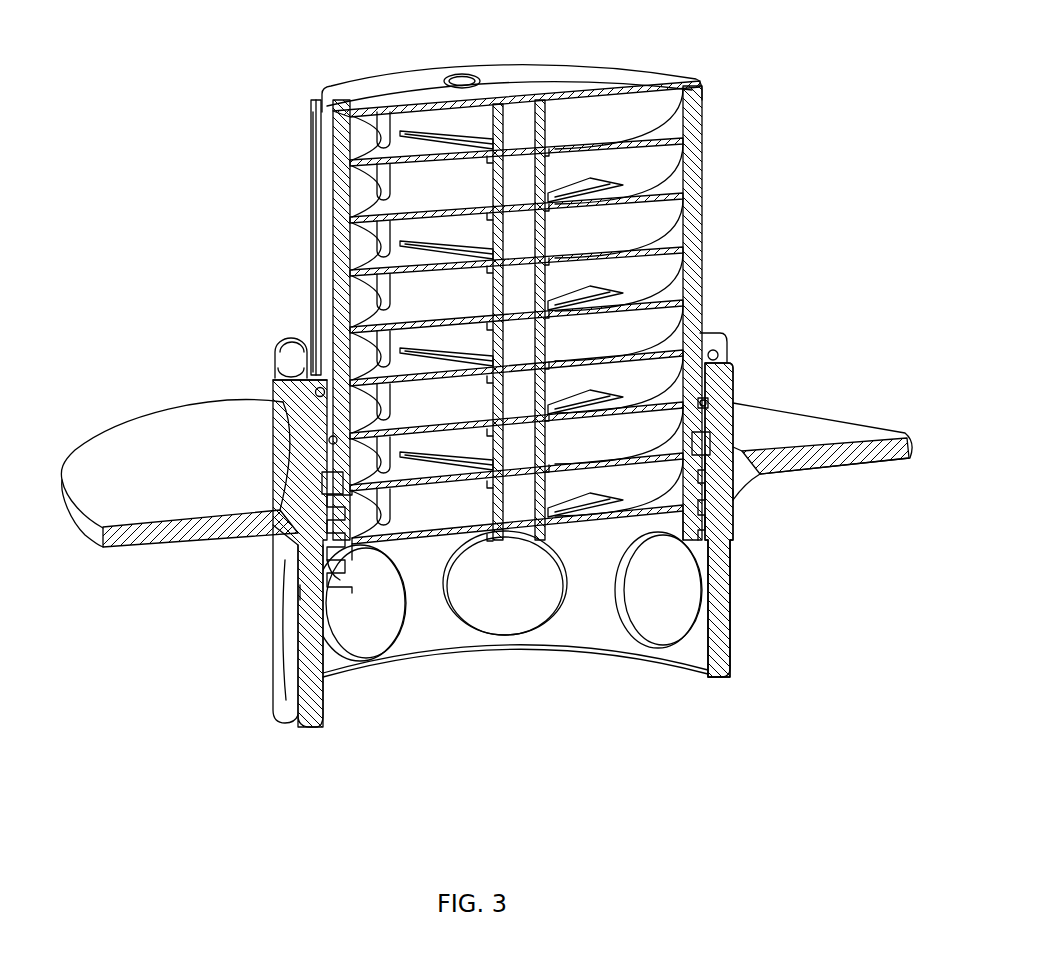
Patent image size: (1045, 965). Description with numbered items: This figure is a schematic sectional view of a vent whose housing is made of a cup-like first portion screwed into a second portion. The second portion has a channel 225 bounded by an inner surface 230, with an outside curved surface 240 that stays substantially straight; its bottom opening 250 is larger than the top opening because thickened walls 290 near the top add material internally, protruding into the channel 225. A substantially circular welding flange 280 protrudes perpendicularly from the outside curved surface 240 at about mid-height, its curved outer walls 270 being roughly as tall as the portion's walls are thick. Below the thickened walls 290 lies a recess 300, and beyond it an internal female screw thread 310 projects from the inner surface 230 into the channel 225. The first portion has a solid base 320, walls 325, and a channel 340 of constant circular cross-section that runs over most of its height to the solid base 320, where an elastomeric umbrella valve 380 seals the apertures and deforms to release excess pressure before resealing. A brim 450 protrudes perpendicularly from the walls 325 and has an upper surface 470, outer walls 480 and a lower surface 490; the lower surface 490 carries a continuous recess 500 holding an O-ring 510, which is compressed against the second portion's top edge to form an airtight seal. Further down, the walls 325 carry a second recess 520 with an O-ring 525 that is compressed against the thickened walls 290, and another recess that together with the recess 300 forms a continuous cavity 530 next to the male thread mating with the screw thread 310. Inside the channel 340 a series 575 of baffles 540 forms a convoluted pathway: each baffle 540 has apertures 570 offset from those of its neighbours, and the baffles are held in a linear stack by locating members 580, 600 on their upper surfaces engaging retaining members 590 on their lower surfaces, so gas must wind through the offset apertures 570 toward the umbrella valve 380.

The channel 225 is at (530, 708).
The inner surface 230 is at (408, 643).
The outside curved surface 240 is at (277, 697).
The bottom opening 250 is at (489, 682).
The curved outer walls 270 is at (667, 627).
The welding flange 280 is at (855, 436).
The thickened walls 290 is at (727, 422).
The recess 300 is at (270, 568).
The internal female screw thread 310 is at (300, 594).
The solid base 320 is at (384, 82).
The walls 325 is at (316, 142).
The channel 340 is at (490, 134).
The umbrella valve 380 is at (462, 75).
The brim 450 is at (724, 342).
The upper surface 470 is at (290, 343).
The outer walls 480 is at (296, 364).
The lower surface 490 is at (328, 442).
The recess 500 is at (302, 416).
The O-ring 510 is at (314, 392).
The recess 520 is at (325, 478).
The O-ring 525 is at (298, 522).
The cavity 530 is at (733, 498).
The baffle 540 is at (702, 232).
The apertures 570 is at (625, 292).
The series 575 is at (508, 226).
The locating member 580 is at (538, 102).
The retaining member 590 is at (548, 148).
The locating member 600 is at (312, 104).